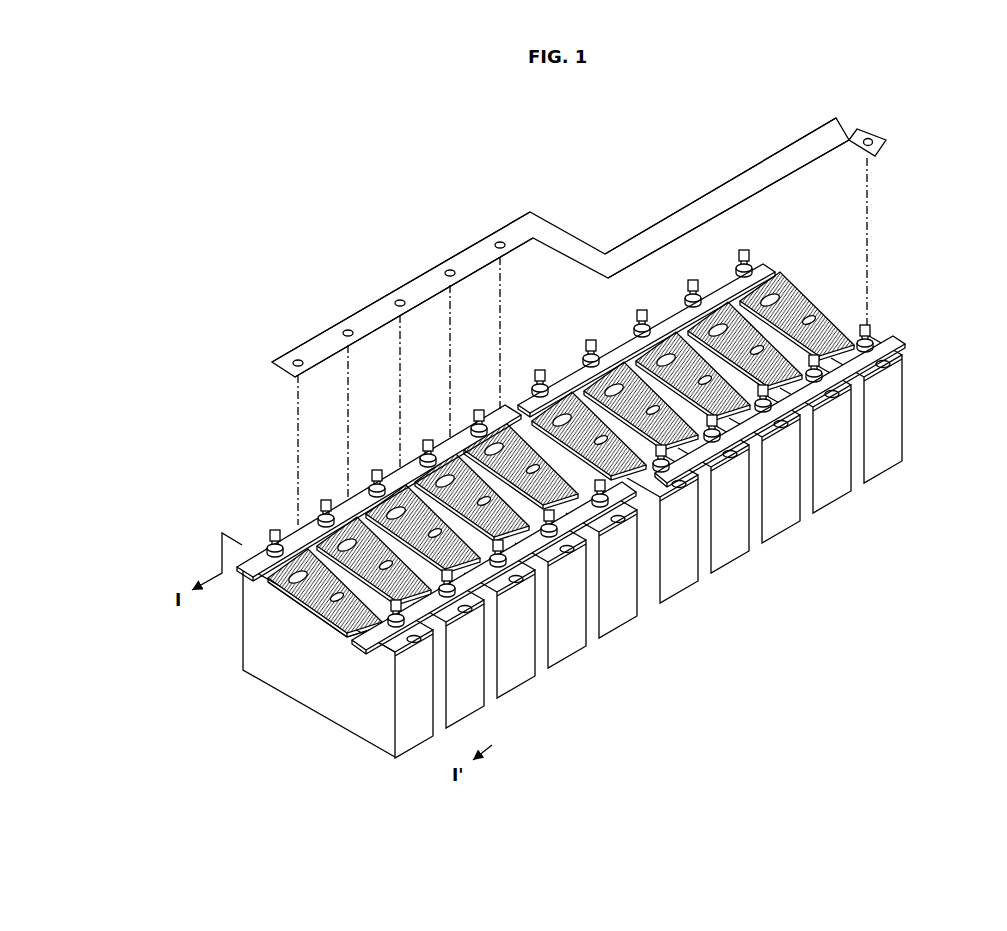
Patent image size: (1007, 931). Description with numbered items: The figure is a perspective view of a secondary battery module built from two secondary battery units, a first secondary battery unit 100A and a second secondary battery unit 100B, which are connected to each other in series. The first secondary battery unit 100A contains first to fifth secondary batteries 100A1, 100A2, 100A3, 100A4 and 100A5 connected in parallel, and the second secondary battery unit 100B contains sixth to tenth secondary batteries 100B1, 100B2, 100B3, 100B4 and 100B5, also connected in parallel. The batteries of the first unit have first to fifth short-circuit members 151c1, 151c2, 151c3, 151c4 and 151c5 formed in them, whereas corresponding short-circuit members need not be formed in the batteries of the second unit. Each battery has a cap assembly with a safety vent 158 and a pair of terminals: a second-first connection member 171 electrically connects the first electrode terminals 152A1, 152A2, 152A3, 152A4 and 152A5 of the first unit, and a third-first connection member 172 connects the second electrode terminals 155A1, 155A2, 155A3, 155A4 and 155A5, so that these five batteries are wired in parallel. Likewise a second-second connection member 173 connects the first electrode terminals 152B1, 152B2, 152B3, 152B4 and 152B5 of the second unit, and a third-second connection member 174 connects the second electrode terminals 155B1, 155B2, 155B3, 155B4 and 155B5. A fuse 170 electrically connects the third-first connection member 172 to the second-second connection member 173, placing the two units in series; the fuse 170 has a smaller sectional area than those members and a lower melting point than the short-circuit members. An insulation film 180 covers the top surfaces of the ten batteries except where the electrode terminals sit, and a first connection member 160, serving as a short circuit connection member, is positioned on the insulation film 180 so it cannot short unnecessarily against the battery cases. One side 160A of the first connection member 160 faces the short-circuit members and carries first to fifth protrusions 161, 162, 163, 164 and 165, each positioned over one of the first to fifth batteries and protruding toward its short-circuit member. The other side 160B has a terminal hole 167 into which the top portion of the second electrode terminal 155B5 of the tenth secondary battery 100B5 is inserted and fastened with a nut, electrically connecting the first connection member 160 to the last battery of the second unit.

The first secondary battery unit 100A is at (466, 661).
The first secondary battery 100A1 is at (364, 694).
The second secondary battery 100A2 is at (463, 729).
The third secondary battery 100A3 is at (514, 699).
The fourth secondary battery 100A4 is at (565, 669).
The fifth secondary battery 100A5 is at (616, 639).
The second secondary battery unit 100B is at (791, 500).
The sixth secondary battery 100B1 is at (677, 604).
The seventh secondary battery 100B2 is at (728, 574).
The eighth secondary battery 100B3 is at (779, 544).
The ninth secondary battery 100B4 is at (829, 514).
The tenth secondary battery 100B5 is at (879, 484).
The first short-circuit member 151c1 is at (270, 592).
The second short-circuit member 151c2 is at (313, 538).
The third short-circuit member 151c3 is at (362, 507).
The fourth short-circuit member 151c4 is at (412, 476).
The fifth short-circuit member 151c5 is at (462, 445).
The first electrode terminal 152A1 is at (395, 626).
The first electrode terminal 152A2 is at (449, 597).
The first electrode terminal 152A3 is at (500, 567).
The first electrode terminal 152A4 is at (551, 537).
The first electrode terminal 152A5 is at (602, 507).
The first electrode terminal 152B1 is at (538, 379).
The first electrode terminal 152B2 is at (590, 349).
The first electrode terminal 152B3 is at (641, 319).
The first electrode terminal 152B4 is at (692, 289).
The first electrode terminal 152B5 is at (742, 259).
The second electrode terminal 155A1 is at (273, 538).
The second electrode terminal 155A2 is at (325, 507).
The second electrode terminal 155A3 is at (376, 477).
The second electrode terminal 155A4 is at (427, 447).
The second electrode terminal 155A5 is at (478, 417).
The second electrode terminal 155B1 is at (664, 472).
The second electrode terminal 155B2 is at (715, 442).
The second electrode terminal 155B3 is at (766, 412).
The second electrode terminal 155B4 is at (817, 382).
The second electrode terminal 155B5 is at (870, 327).
The safety vent 158 is at (300, 614).
The first connection member 160 is at (591, 321).
The one side of the first connection member 160A is at (400, 263).
The other side of the first connection member 160B is at (748, 178).
The first protrusion 161 is at (291, 360).
The second protrusion 162 is at (342, 330).
The third protrusion 163 is at (394, 300).
The fourth protrusion 164 is at (444, 270).
The fifth protrusion 165 is at (495, 242).
The terminal hole 167 is at (887, 136).
The fuse 170 is at (344, 461).
The second-first connection member 171 is at (375, 640).
The third-first connection member 172 is at (235, 567).
The second-second connection member 173 is at (628, 340).
The third-second connection member 174 is at (896, 344).
The insulation film 180 is at (333, 624).